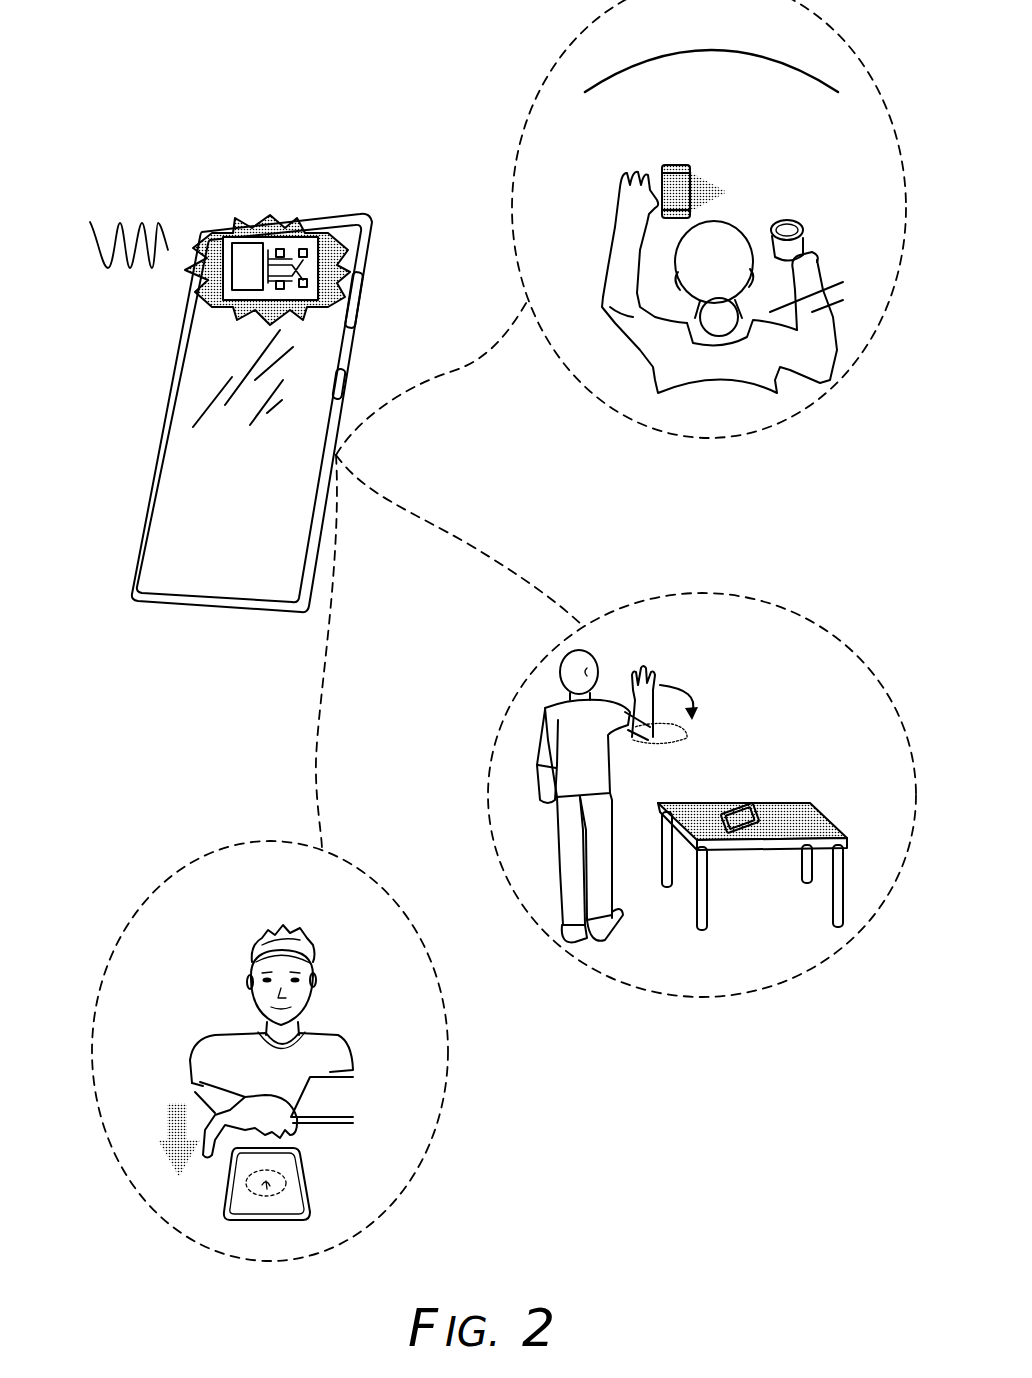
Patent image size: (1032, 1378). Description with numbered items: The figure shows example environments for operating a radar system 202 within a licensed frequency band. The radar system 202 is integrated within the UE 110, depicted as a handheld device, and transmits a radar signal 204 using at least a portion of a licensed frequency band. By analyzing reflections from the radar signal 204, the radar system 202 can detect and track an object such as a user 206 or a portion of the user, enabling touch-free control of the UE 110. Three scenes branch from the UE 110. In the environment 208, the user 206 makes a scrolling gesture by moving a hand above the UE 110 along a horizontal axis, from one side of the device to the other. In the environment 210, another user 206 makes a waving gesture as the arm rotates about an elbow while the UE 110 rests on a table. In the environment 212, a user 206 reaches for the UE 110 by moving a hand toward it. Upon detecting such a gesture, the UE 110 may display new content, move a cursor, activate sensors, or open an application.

The UE 110 is at (142, 535).
The radar system 202 is at (272, 232).
The radar signal 204 is at (54, 247).
The user 206 is at (608, 260).
The environment 208 is at (729, 34).
The environment 210 is at (720, 653).
The environment 212 is at (286, 900).